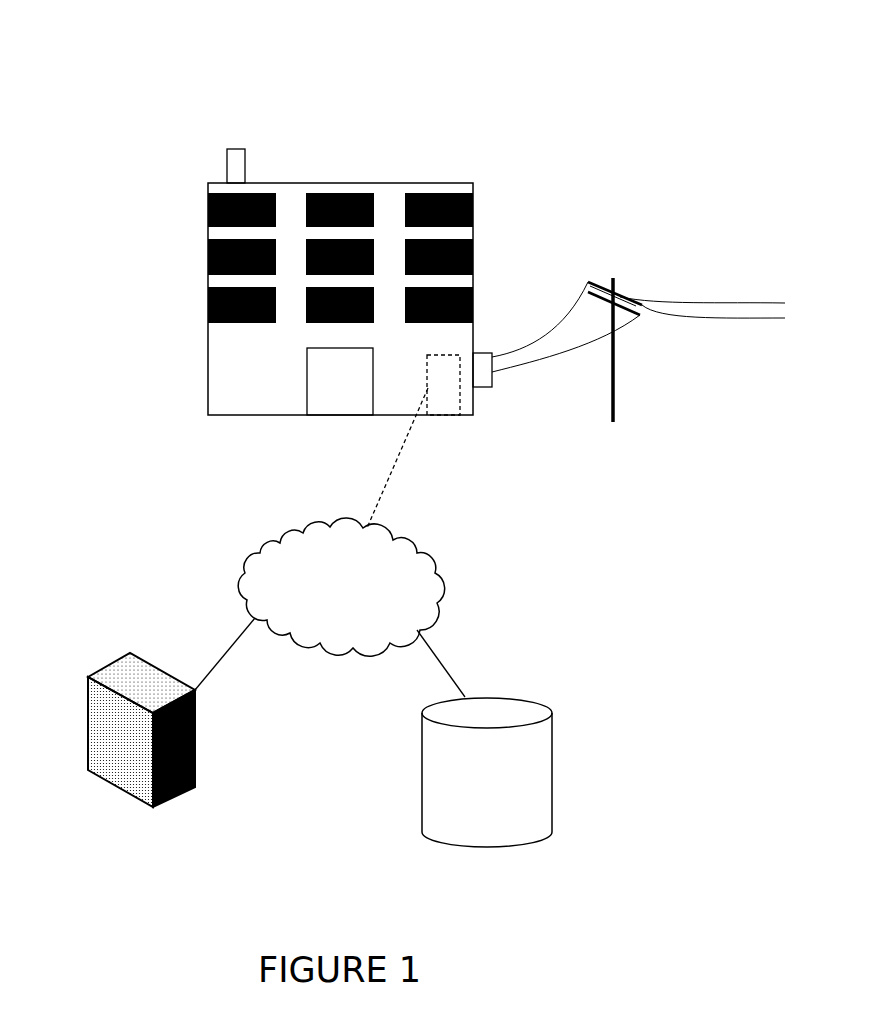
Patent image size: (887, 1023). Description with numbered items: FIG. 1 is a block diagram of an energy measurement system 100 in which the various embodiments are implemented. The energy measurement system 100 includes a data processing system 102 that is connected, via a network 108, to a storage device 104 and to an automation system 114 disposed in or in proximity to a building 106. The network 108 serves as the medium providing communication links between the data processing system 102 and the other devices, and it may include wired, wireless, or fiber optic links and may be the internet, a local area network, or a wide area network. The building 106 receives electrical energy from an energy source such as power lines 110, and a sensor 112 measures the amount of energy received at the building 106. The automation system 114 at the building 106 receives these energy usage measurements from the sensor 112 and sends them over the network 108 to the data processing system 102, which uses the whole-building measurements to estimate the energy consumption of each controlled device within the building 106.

The energy measurement system 100 is at (115, 97).
The data processing system 102 is at (85, 792).
The storage device 104 is at (487, 772).
The building 106 is at (448, 172).
The network 108 is at (341, 587).
The power lines 110 is at (557, 298).
The sensor 112 is at (489, 392).
The automation system 114 is at (452, 417).